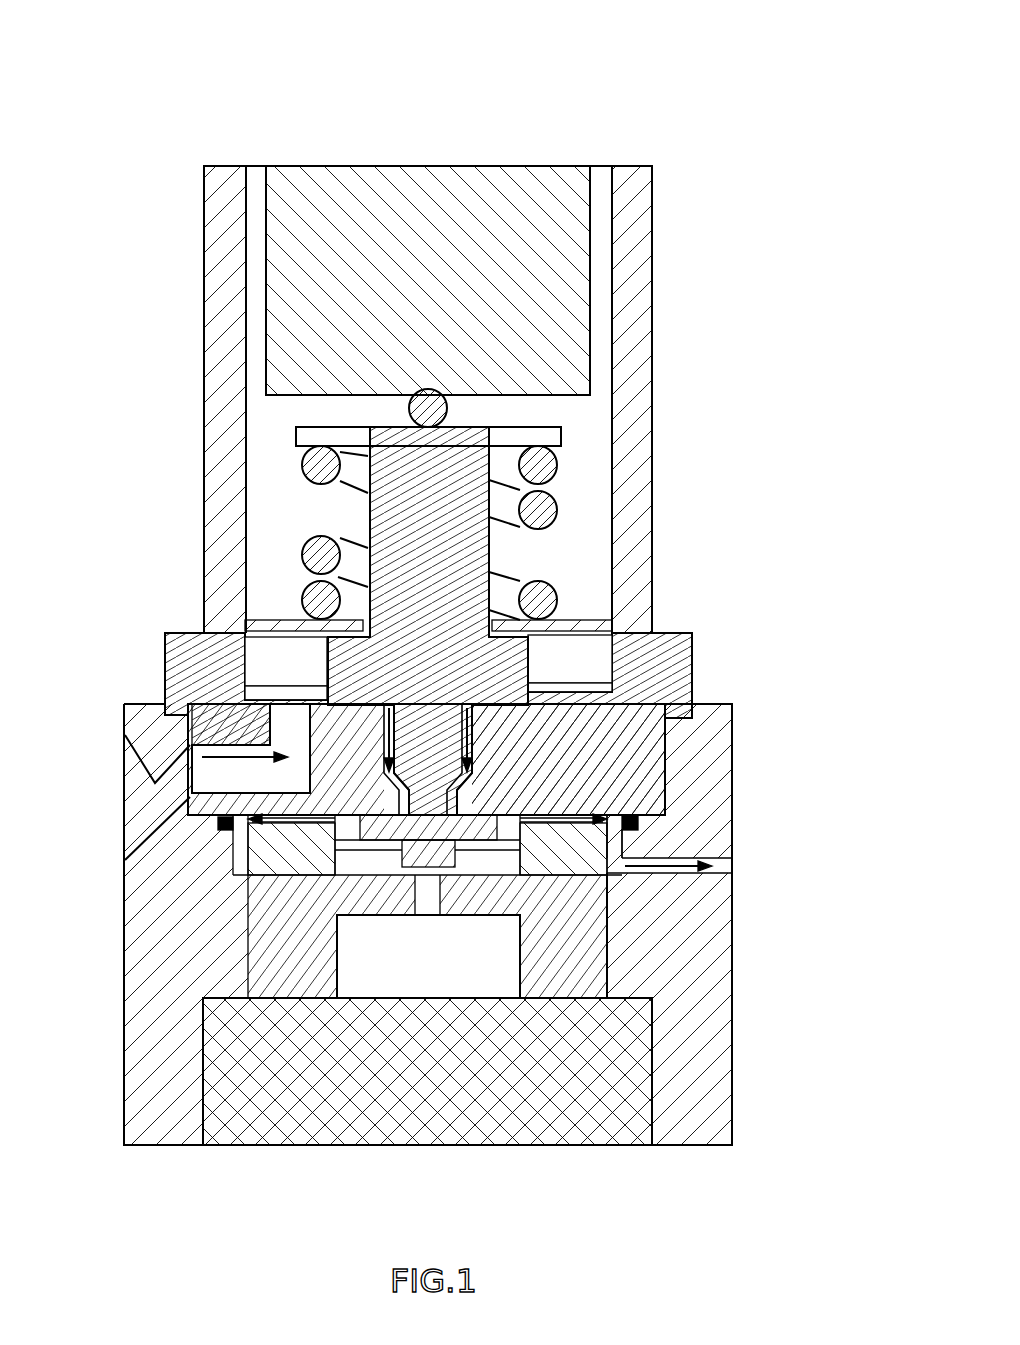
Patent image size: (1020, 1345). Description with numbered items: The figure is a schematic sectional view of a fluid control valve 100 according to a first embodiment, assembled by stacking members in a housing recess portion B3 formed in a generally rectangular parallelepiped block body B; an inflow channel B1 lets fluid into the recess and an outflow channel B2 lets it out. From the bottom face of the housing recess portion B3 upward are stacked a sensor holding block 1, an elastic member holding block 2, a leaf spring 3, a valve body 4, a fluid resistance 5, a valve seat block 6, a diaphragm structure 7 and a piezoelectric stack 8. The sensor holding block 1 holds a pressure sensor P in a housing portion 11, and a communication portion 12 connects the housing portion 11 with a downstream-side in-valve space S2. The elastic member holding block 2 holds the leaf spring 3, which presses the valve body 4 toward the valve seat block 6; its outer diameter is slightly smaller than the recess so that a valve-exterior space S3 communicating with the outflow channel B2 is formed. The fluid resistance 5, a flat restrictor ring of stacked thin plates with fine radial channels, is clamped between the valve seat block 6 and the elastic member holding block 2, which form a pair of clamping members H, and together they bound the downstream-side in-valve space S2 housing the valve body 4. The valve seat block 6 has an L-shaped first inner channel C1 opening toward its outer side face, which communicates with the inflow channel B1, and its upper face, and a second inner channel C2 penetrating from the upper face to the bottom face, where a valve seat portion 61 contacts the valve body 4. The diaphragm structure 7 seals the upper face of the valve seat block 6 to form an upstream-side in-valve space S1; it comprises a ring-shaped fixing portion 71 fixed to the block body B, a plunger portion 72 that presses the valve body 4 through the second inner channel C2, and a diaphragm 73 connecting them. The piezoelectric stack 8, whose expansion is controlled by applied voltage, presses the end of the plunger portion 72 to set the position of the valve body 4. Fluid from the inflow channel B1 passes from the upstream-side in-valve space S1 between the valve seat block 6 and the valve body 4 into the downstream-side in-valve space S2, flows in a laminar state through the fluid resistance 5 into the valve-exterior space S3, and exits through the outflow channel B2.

The fluid control valve 100 is at (433, 622).
The piezoelectric stack 8 is at (440, 166).
The plunger portion 72 is at (368, 510).
The diaphragm 73 is at (292, 688).
The diaphragm structure 7 is at (458, 433).
The fixing portion 71 is at (190, 632).
The upstream-side in-valve space S1 is at (300, 700).
The first inner channel C1 is at (264, 781).
The second inner channel C2 is at (472, 726).
The valve seat portion 61 is at (382, 812).
The inflow channel B1 is at (148, 800).
The valve seat block 6 is at (482, 759).
The pair of clamping members H is at (500, 776).
The elastic member holding block 2 is at (608, 845).
The outflow channel B2 is at (732, 868).
The valve-exterior space S3 is at (242, 850).
The fluid resistance 5 is at (296, 835).
The leaf spring 3 is at (368, 855).
The downstream-side in-valve space S2 is at (386, 858).
The valve body 4 is at (462, 855).
The communication portion 12 is at (441, 898).
The sensor holding block 1 is at (248, 950).
The housing portion 11 is at (335, 968).
The pressure sensor P is at (428, 956).
The housing recess portion B3 is at (619, 940).
The block body B is at (178, 1147).